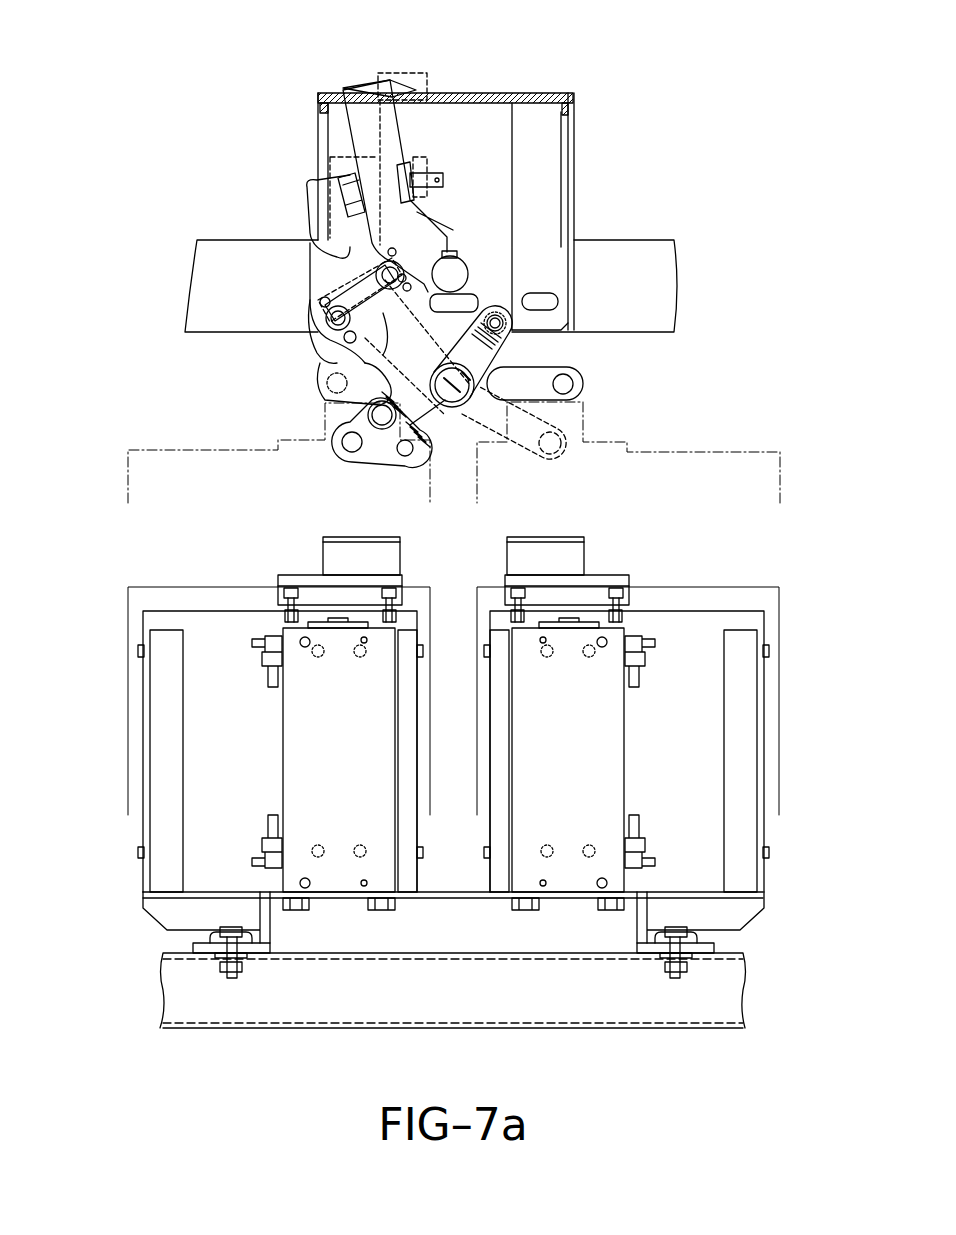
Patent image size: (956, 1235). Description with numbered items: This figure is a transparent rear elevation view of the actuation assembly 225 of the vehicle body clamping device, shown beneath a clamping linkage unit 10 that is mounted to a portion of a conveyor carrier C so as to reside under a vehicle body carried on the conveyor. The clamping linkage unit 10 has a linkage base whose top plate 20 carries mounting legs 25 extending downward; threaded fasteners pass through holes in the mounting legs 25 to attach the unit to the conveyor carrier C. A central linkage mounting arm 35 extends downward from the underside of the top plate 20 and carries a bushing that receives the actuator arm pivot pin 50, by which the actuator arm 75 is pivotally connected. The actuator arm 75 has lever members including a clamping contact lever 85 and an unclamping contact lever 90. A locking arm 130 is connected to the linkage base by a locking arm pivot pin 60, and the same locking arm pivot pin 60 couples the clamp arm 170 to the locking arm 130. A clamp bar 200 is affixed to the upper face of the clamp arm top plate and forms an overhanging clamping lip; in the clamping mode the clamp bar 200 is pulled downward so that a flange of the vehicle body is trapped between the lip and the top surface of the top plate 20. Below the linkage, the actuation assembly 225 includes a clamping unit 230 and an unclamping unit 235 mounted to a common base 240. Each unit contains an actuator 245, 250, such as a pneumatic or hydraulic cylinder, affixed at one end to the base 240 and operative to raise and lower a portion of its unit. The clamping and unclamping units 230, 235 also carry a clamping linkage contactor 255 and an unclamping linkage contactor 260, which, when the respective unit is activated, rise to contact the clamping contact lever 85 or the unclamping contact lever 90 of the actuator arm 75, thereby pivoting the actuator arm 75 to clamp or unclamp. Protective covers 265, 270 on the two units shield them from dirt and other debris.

The clamping linkage unit 10 is at (598, 113).
The top plate 20 is at (492, 100).
The mounting legs 25 is at (578, 188).
The central linkage mounting arm 35 is at (490, 372).
The actuator arm pivot pin 50 is at (442, 396).
The locking arm pivot pin 60 is at (458, 272).
The actuator arm 75 is at (307, 351).
The clamping contact lever 85 is at (352, 452).
The unclamping contact lever 90 is at (572, 378).
The locking arm 130 is at (305, 202).
The clamp arm 170 is at (350, 137).
The clamp bar 200 is at (385, 88).
The actuation assembly 225 is at (98, 530).
The clamping unit 230 is at (131, 924).
The unclamping unit 235 is at (773, 924).
The common base 240 is at (291, 965).
The actuator 245 is at (303, 742).
The actuator 250 is at (605, 742).
The clamping linkage contactor 255 is at (333, 557).
The unclamping linkage contactor 260 is at (578, 557).
The protective cover 265 is at (125, 630).
The protective cover 270 is at (781, 630).
The conveyor carrier C is at (652, 278).